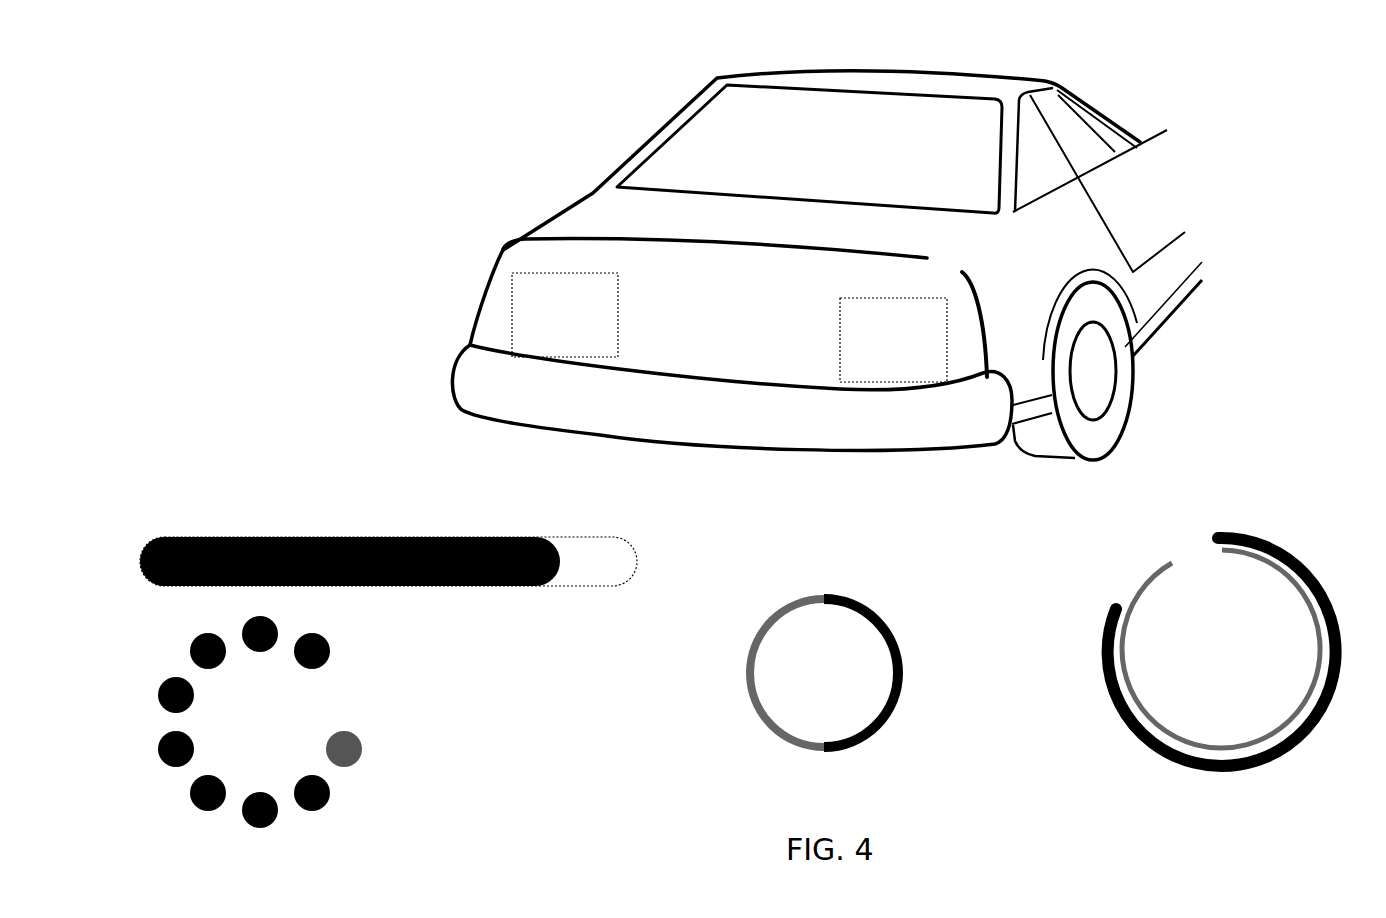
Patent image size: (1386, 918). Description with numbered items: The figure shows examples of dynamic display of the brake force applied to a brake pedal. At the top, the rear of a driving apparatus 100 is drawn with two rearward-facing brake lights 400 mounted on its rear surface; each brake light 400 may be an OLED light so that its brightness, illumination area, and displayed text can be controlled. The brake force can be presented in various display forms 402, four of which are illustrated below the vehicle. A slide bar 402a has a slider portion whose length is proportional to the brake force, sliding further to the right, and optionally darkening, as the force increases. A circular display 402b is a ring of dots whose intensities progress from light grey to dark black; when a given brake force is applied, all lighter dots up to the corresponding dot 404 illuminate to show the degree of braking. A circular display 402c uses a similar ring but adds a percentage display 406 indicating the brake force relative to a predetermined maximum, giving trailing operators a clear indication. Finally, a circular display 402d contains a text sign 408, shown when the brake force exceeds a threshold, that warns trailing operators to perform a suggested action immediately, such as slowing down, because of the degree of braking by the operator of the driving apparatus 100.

The driving apparatus 100 is at (827, 278).
The brake light 400 is at (550, 357).
The display forms 402 is at (729, 327).
The slide bar 402a is at (203, 538).
The circular display 402b is at (278, 722).
The circular display 402c is at (835, 659).
The circular display 402d is at (1223, 646).
The dot 404 is at (323, 650).
The percentage display 406 is at (782, 678).
The text sign 408 is at (1242, 717).